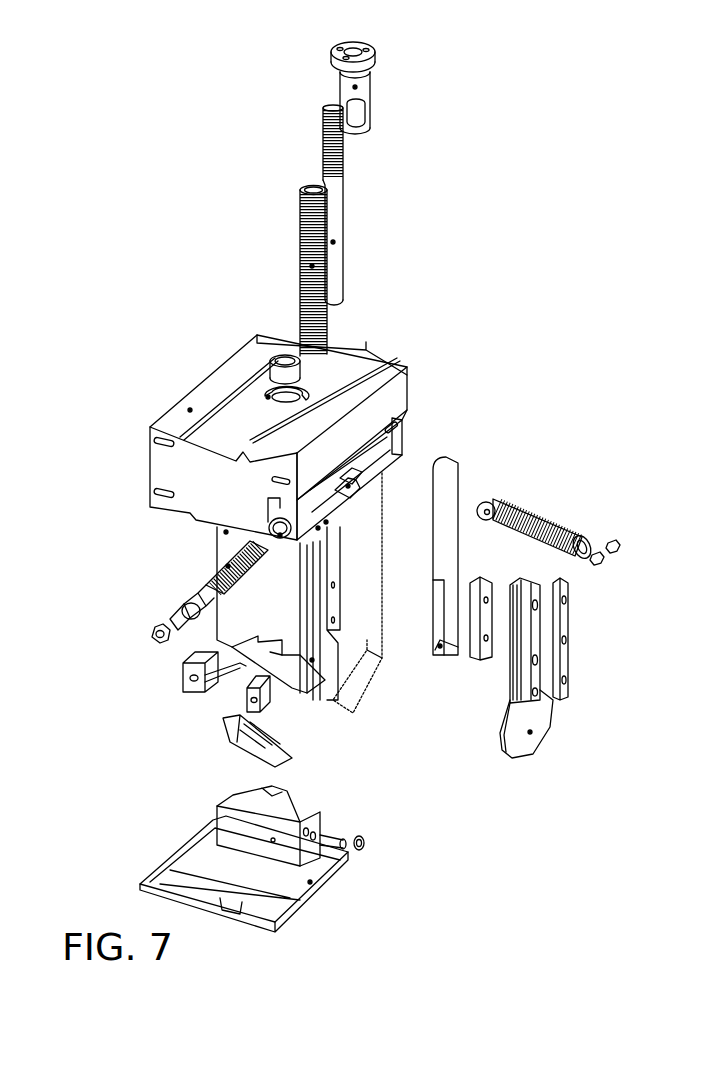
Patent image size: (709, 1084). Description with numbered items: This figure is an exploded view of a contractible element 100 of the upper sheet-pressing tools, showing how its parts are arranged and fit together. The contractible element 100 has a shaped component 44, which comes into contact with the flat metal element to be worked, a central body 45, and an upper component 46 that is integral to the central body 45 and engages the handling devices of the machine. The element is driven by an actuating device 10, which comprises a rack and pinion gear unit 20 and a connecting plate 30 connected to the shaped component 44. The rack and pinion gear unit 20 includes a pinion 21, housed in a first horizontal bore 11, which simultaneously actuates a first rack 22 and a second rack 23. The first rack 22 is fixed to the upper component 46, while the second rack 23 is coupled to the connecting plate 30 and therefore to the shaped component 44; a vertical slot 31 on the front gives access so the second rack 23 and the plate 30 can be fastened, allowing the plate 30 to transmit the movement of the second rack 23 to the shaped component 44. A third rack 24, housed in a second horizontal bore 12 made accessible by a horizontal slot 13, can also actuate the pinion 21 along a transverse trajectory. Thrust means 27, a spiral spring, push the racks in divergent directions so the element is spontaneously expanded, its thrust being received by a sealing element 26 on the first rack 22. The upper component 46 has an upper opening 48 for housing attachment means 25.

The actuating device 10 is at (270, 103).
The rack and pinion gear unit 20 is at (424, 275).
The contractible element 100 is at (583, 385).
The attachment means 25 is at (357, 87).
The first rack 22 is at (335, 242).
The thrust means 27 is at (310, 266).
The upper component 46 is at (188, 409).
The sealing element 26 is at (283, 357).
The upper opening 48 is at (266, 396).
The first horizontal bore 11 is at (350, 487).
The second horizontal bore 12 is at (320, 530).
The horizontal slot 13 is at (283, 535).
The central body 45 is at (224, 532).
The third rack 24 is at (226, 566).
The vertical slot 31 is at (313, 662).
The second rack 23 is at (439, 649).
The pinion 21 is at (489, 506).
The connecting plate 30 is at (532, 734).
The shaped component 44 is at (312, 884).